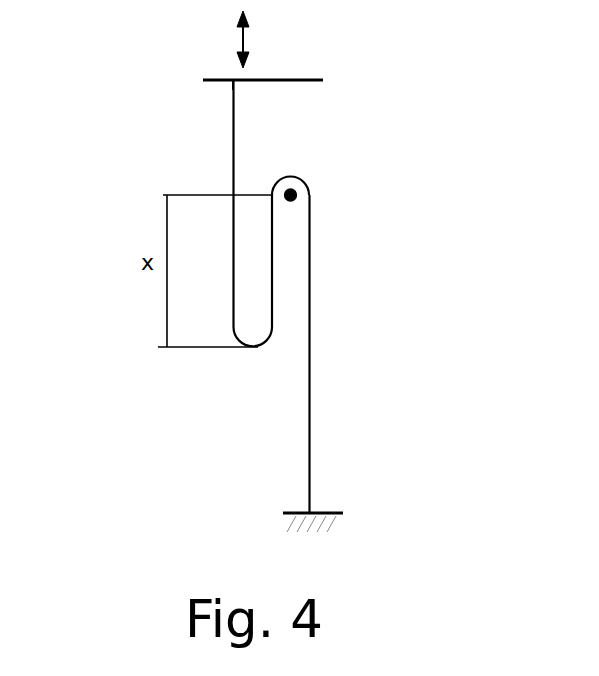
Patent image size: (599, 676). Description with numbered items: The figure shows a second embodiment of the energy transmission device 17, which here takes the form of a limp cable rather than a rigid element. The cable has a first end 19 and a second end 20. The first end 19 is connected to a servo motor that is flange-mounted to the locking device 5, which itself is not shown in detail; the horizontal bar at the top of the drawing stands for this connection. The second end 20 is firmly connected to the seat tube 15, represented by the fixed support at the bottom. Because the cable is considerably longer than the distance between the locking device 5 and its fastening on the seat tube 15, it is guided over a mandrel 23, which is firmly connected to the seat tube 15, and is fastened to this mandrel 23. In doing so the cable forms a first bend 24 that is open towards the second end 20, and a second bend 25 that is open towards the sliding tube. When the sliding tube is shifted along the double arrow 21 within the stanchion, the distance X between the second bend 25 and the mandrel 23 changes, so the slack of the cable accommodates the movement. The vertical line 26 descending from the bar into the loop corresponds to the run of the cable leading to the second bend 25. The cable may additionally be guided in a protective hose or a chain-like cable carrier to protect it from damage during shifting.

The locking device 5 is at (317, 80).
The seat tube 15 is at (290, 513).
The energy transmission device 17 is at (310, 283).
The first end 19 is at (235, 82).
The second end 20 is at (312, 512).
The double arrow 21 is at (240, 21).
The mandrel 23 is at (297, 198).
The first bend 24 is at (298, 183).
The second bend 25 is at (262, 348).
The rod 26 is at (233, 107).